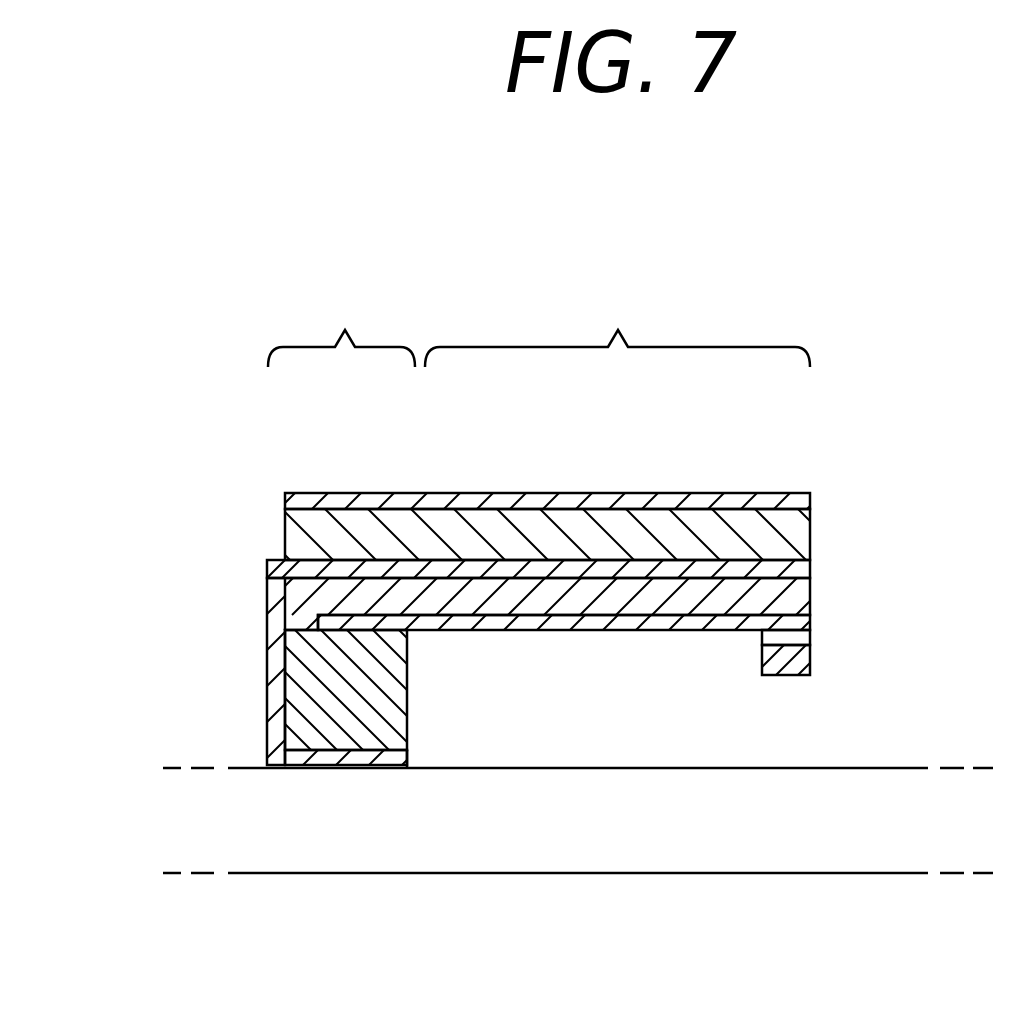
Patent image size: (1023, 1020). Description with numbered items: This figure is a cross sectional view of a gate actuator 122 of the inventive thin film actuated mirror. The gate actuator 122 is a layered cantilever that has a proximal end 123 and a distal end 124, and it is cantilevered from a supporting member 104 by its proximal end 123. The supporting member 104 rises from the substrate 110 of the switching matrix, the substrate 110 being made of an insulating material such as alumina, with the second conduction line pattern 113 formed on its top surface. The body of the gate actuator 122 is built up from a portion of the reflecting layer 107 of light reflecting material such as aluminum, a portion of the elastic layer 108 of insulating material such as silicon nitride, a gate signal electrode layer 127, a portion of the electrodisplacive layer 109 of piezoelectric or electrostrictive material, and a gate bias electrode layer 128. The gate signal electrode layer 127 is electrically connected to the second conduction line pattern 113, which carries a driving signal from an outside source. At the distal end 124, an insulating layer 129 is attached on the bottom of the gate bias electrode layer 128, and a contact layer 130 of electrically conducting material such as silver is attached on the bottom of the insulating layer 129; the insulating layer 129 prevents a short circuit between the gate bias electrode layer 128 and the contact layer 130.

The supporting member 104 is at (380, 666).
The reflecting layer 107 is at (578, 495).
The elastic layer 108 is at (660, 530).
The electrodisplacive layer 109 is at (790, 597).
The substrate 110 is at (652, 778).
The second conduction line pattern 113 is at (395, 758).
The gate actuator 122 is at (396, 245).
The proximal end 123 is at (341, 320).
The distal end 124 is at (617, 320).
The gate signal electrode layer 127 is at (735, 570).
The gate bias electrode layer 128 is at (795, 617).
The insulating layer 129 is at (780, 640).
The contact layer 130 is at (805, 672).